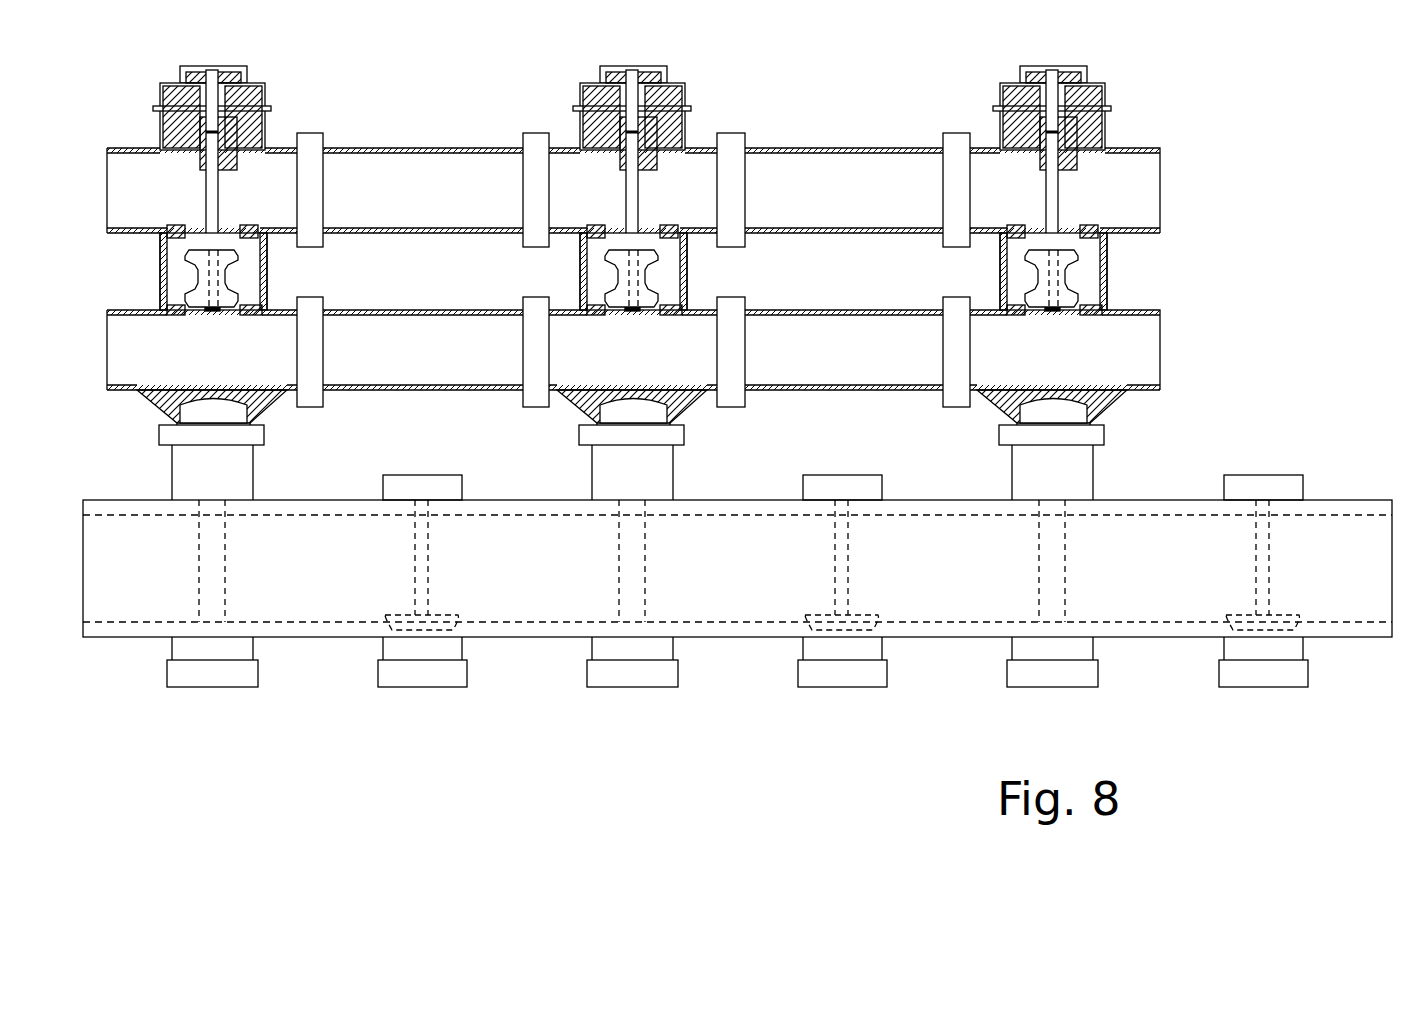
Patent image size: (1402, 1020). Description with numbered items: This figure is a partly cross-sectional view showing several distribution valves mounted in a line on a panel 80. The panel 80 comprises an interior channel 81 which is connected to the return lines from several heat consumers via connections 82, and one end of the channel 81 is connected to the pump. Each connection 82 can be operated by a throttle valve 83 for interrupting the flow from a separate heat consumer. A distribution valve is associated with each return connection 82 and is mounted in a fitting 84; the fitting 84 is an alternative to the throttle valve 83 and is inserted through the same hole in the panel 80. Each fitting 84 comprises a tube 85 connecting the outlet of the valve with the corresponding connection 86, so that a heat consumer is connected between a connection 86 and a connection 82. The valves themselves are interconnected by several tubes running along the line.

The panel 80 is at (93, 638).
The interior channel 81 is at (129, 623).
The connection 82 is at (377, 673).
The throttle valve 83 is at (450, 472).
The fitting 84 is at (265, 437).
The tube 85 is at (228, 537).
The connection 86 is at (190, 687).